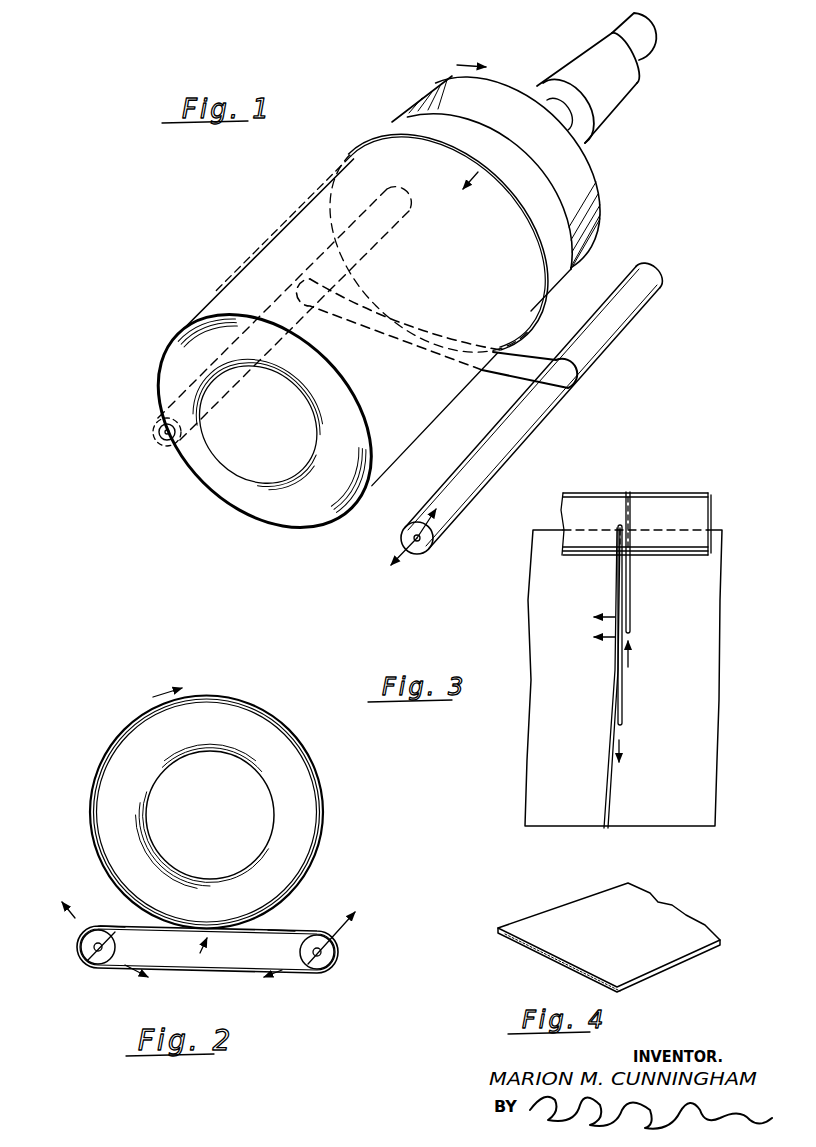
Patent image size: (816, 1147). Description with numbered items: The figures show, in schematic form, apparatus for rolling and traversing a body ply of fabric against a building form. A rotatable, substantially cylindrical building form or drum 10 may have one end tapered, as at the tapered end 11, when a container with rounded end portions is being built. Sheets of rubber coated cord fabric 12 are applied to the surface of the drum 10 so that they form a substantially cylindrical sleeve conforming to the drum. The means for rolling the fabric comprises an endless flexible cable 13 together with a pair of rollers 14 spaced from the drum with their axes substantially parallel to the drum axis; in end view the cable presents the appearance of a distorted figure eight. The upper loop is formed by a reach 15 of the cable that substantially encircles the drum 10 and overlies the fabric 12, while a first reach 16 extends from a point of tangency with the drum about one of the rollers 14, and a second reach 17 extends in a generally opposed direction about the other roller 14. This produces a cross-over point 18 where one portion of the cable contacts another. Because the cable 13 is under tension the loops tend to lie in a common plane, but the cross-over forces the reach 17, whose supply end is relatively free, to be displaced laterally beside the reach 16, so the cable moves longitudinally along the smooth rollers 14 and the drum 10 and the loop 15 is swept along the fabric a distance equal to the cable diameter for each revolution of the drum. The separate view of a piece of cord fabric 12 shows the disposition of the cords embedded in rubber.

In FIG. 1, the building form or drum 10 is at (589, 207).
In FIG. 2, the building form or drum 10 is at (290, 766).
In FIG. 3, the building form or drum 10 is at (704, 830).
In FIG. 1, the tapered end 11 is at (190, 372).
In FIG. 1, the rubber coated cord fabric 12 is at (178, 360).
In FIG. 4, the rubber coated cord fabric 12 is at (535, 905).
In FIG. 2, the cable 13 is at (252, 700).
In FIG. 1, the rollers 14 is at (160, 436).
In FIG. 2, the rollers 14 is at (117, 950).
In FIG. 3, the rollers 14 is at (697, 492).
In FIG. 1, the reach (loop) of the cable 15 is at (340, 170).
In FIG. 2, the reach (loop) of the cable 15 is at (94, 795).
In FIG. 3, the reach (loop) of the cable 15 is at (604, 832).
In FIG. 2, the first reach of the cable 16 is at (122, 923).
In FIG. 3, the first reach of the cable 16 is at (623, 715).
In FIG. 1, the second reach of the cable 17 is at (552, 360).
In FIG. 2, the second reach of the cable 17 is at (282, 930).
In FIG. 3, the second reach of the cable 17 is at (633, 490).
In FIG. 2, the cross-over point 18 is at (188, 949).
In FIG. 3, the cross-over point 18 is at (609, 652).